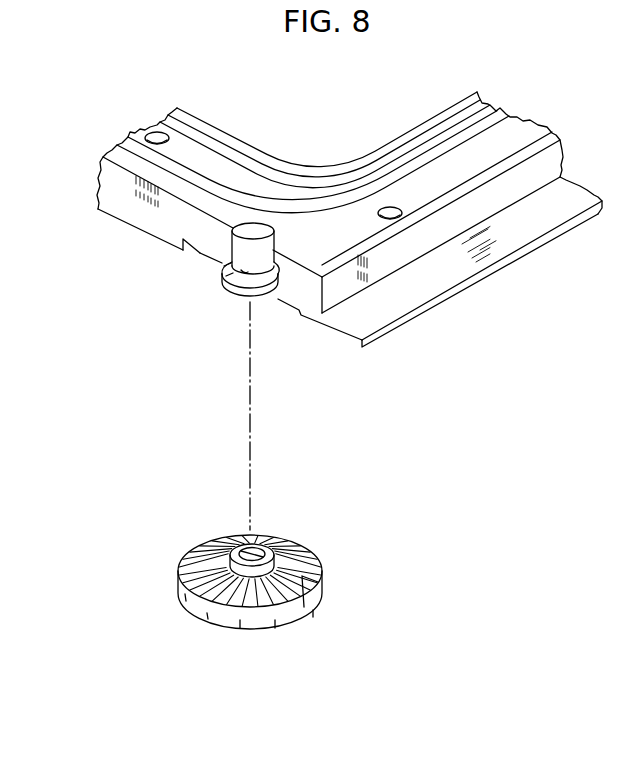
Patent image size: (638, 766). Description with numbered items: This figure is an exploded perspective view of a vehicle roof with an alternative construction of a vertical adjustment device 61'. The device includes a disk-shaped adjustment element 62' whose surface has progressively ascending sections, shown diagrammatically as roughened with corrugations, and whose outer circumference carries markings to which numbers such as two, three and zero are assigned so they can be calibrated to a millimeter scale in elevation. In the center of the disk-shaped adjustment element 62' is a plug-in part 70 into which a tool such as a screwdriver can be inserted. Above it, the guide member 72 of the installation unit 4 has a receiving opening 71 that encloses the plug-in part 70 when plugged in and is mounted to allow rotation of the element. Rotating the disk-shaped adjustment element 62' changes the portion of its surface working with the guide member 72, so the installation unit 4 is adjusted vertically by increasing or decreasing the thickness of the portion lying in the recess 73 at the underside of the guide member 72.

The installation unit 4 is at (324, 228).
The recess 73 is at (198, 258).
The receiving opening 71 is at (226, 290).
The guide member 72 is at (411, 320).
The vertical adjustment device 61' is at (251, 568).
The plug-in part 70 is at (268, 543).
The disk-shaped adjustment element 62' is at (287, 571).